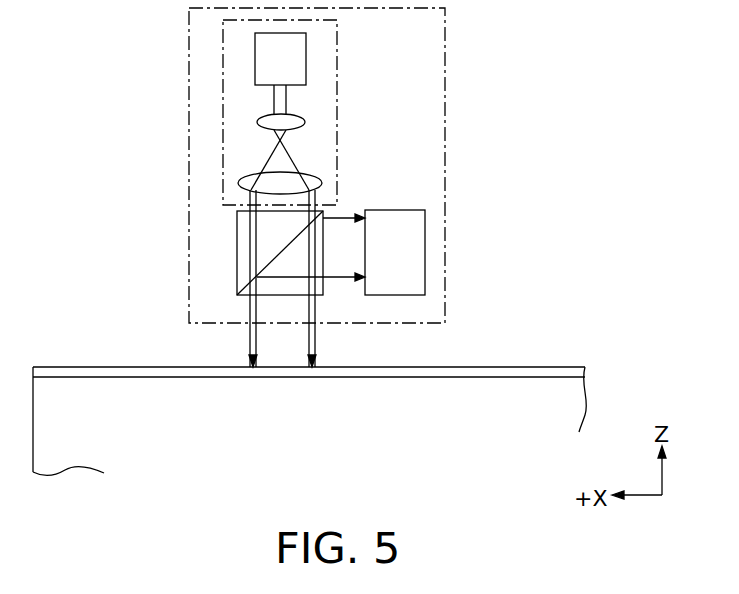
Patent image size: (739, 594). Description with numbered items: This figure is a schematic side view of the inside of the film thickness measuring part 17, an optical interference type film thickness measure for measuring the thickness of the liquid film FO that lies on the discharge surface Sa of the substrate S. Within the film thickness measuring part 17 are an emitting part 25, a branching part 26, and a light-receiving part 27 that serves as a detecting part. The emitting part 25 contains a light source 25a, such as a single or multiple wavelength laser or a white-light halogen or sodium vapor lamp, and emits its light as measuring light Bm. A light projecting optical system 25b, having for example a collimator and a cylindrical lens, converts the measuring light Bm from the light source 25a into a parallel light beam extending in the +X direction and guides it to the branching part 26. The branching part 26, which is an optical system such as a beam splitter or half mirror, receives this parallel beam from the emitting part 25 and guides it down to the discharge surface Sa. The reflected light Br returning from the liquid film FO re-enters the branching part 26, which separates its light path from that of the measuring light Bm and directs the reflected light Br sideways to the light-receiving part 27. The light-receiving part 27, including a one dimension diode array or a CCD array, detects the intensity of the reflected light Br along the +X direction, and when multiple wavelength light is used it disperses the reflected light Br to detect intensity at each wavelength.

The film thickness measuring part 17 is at (445, 27).
The emitting part 25 is at (337, 55).
The light source 25a is at (280, 59).
The light projecting optical system 25b is at (311, 169).
The branching part 26 is at (237, 258).
The light-receiving part 27 is at (341, 252).
The measuring light Bm is at (273, 103).
The reflected light Br is at (333, 279).
The substrate S is at (50, 390).
The discharge surface Sa is at (520, 368).
The liquid film FO is at (117, 367).